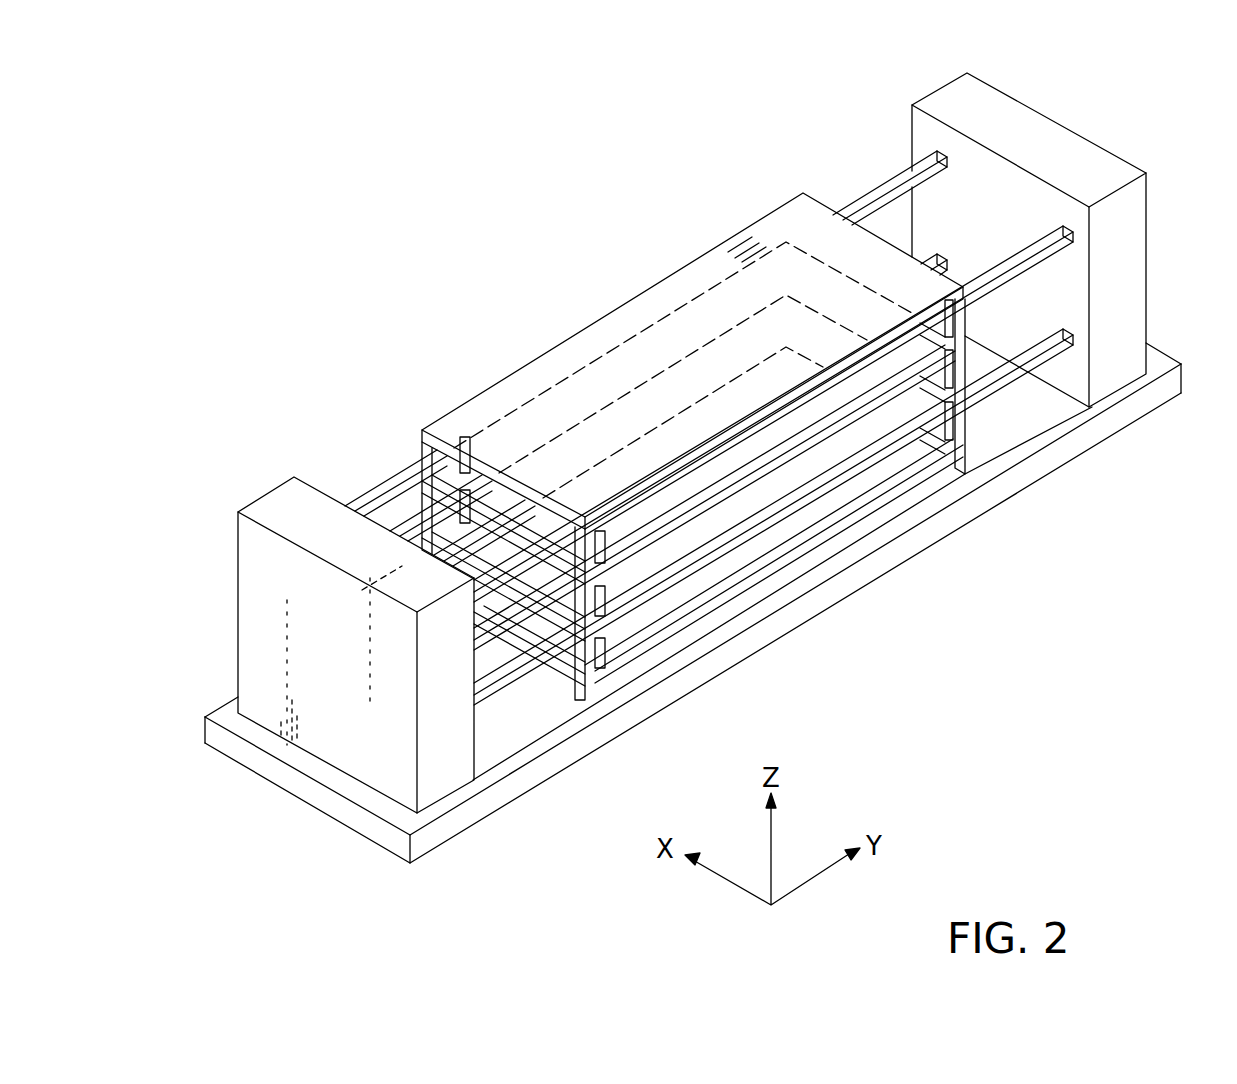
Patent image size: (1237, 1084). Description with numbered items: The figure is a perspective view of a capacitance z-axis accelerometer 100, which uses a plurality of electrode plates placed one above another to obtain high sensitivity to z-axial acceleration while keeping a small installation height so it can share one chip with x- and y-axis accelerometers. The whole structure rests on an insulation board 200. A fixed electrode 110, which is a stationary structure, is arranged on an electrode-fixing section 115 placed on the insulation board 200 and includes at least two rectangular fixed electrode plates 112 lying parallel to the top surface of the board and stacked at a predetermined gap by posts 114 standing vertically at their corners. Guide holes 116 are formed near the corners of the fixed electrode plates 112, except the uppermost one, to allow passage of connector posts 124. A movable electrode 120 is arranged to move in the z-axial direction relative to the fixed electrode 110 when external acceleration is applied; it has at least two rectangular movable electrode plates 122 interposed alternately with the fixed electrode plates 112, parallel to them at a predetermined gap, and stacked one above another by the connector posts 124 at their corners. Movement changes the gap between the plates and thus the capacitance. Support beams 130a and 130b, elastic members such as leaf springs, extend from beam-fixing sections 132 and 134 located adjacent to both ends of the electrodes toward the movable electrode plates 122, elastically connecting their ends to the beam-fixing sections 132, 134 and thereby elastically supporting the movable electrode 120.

The accelerometer 100 is at (393, 213).
The fixed electrode 110 is at (930, 572).
The fixed electrode plates 112 is at (928, 347).
The posts 114 is at (600, 607).
The electrode-fixing section 115 is at (827, 542).
The guide holes 116 is at (603, 527).
The movable electrode 120 is at (337, 375).
The movable electrode plates 122 is at (462, 497).
The connector posts 124 is at (595, 545).
The support beam 130a is at (538, 548).
The support beam 130b is at (1015, 270).
The beam-fixing section 132 is at (243, 615).
The beam-fixing section 134 is at (1115, 362).
The insulation board 200 is at (335, 775).